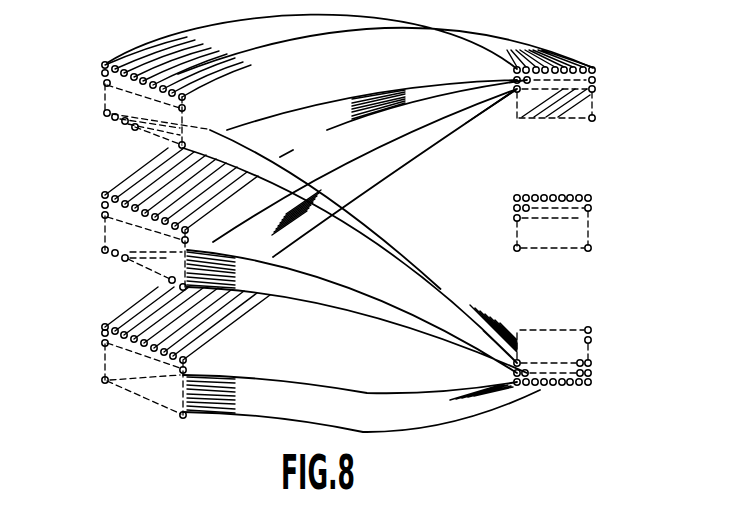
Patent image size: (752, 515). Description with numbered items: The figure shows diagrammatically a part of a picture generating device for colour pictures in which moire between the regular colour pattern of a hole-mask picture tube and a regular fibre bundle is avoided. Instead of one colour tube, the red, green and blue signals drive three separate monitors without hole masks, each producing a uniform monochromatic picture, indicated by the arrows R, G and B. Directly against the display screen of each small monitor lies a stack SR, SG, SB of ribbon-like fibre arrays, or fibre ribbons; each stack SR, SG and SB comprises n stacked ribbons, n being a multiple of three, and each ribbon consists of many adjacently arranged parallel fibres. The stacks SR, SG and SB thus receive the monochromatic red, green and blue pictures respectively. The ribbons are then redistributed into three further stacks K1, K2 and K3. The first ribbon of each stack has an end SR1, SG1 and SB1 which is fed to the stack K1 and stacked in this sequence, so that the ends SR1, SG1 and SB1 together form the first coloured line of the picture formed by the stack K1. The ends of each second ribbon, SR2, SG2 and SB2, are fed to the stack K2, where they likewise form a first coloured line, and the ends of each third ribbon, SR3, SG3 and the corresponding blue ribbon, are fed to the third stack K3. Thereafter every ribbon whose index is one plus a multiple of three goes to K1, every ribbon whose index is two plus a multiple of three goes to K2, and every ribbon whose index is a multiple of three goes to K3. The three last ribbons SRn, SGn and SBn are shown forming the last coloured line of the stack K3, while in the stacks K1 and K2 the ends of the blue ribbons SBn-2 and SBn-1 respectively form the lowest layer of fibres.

The red monochromatic picture R is at (110, 133).
The green monochromatic picture G is at (117, 268).
The blue monochromatic picture B is at (122, 398).
The stack of fibre ribbons SR is at (116, 98).
The stack of fibre ribbons SG is at (116, 232).
The stack of fibre ribbons SB is at (113, 353).
The end of first red ribbon SR1 is at (104, 64).
The end of second red ribbon SR2 is at (103, 74).
The end of third red ribbon SR3 is at (105, 84).
The end of n-th red ribbon SRn is at (105, 114).
The end of first green ribbon SG1 is at (104, 193).
The end of second green ribbon SG2 is at (103, 205).
The end of third green ribbon SG3 is at (104, 216).
The end of n-th green ribbon SGn is at (104, 251).
The end of first blue ribbon SB1 is at (186, 358).
The end of second blue ribbon SB2 is at (186, 369).
The end of n-th blue ribbon SBn is at (186, 415).
The end of (n-1)-th blue ribbon SBn-1 is at (591, 248).
The end of (n-2)-th blue ribbon SBn-2 is at (594, 120).
The further stack K1 is at (578, 102).
The stack K2 is at (572, 224).
The third stack K3 is at (568, 336).